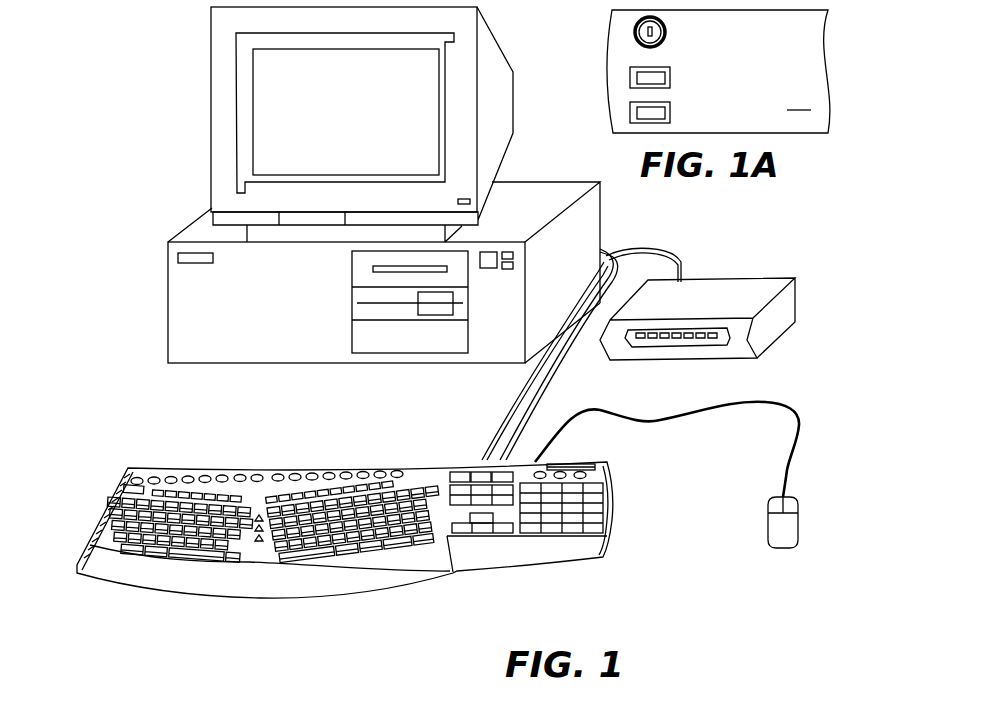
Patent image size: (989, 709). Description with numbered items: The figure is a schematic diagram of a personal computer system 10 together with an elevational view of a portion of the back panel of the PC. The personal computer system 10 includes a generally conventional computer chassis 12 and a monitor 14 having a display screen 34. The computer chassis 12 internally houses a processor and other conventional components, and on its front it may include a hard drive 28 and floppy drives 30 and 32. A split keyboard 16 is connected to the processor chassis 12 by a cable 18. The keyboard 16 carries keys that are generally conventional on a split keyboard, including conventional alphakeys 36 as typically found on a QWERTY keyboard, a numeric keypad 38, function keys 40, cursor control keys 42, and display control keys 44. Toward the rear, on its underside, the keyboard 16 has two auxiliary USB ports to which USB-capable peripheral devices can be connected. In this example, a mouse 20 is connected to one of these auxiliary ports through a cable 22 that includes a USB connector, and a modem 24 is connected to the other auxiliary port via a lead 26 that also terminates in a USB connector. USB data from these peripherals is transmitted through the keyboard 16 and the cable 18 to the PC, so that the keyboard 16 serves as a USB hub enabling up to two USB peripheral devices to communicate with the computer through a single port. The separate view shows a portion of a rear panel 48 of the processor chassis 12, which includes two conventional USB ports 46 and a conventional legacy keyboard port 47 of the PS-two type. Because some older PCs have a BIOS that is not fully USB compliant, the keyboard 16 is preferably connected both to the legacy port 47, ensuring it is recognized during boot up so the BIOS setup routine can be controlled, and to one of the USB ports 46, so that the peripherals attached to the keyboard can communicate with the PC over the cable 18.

In FIG. 1, the personal computer system 10 is at (319, 542).
In FIG. 1, the computer chassis 12 is at (361, 290).
In FIG. 1A, the computer chassis 12 is at (613, 55).
In FIG. 1, the monitor 14 is at (386, 124).
In FIG. 1, the keyboard 16 is at (345, 531).
In FIG. 1, the cable 18 is at (560, 371).
In FIG. 1, the mouse 20 is at (768, 532).
In FIG. 1, the cable 22 is at (797, 418).
In FIG. 1, the modem 24 is at (710, 357).
In FIG. 1, the lead 26 is at (503, 410).
In FIG. 1, the hard drive 28 is at (388, 324).
In FIG. 1, the floppy drive 30 is at (352, 313).
In FIG. 1, the floppy drive 32 is at (352, 271).
In FIG. 1, the display screen 34 is at (327, 118).
In FIG. 1, the alphakeys 36 is at (283, 540).
In FIG. 1, the numeric keypad 38 is at (560, 535).
In FIG. 1, the function keys 40 is at (133, 470).
In FIG. 1, the cursor control keys 42 is at (481, 535).
In FIG. 1, the display control keys 44 is at (445, 478).
In FIG. 1A, the USB ports 46 is at (630, 78).
In FIG. 1A, the PS/2 port 47 is at (633, 33).
In FIG. 1A, the rear panel 48 is at (694, 71).